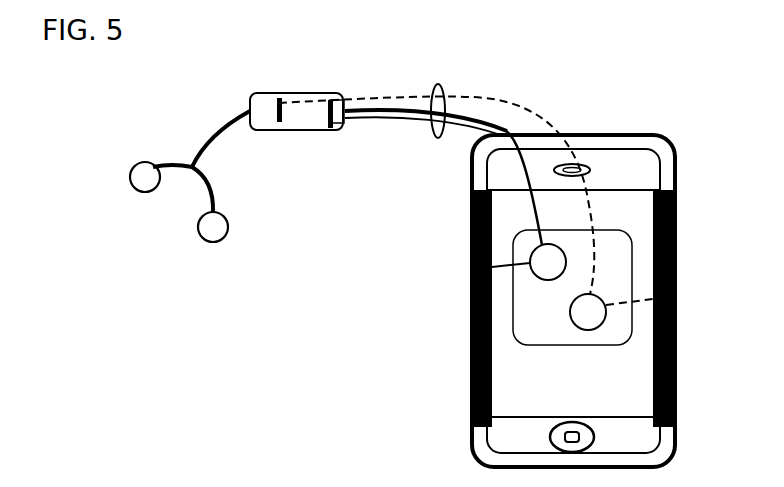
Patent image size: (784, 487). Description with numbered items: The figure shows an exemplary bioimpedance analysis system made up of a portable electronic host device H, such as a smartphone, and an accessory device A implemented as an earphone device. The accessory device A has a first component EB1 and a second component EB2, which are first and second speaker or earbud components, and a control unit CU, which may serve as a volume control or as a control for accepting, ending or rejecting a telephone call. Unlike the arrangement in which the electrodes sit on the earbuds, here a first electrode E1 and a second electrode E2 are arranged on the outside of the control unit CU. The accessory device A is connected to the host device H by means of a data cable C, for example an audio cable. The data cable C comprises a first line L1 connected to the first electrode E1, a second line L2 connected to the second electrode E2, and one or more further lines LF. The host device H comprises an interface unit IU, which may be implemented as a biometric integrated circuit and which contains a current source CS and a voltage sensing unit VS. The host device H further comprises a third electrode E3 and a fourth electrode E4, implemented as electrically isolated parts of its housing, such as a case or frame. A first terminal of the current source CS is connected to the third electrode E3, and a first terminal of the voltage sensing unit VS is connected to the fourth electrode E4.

The accessory device A is at (230, 97).
The first component EB1 is at (133, 192).
The second component EB2 is at (190, 237).
The control unit CU is at (272, 130).
The first electrode E1 is at (278, 100).
The second electrode E2 is at (328, 125).
The second line L2 is at (388, 123).
The data cable C is at (443, 88).
The first line L1 is at (485, 98).
The further lines LF is at (505, 123).
The portable electronic host device H is at (678, 170).
The third electrode E3 is at (677, 328).
The fourth electrode E4 is at (470, 390).
The interface unit IU is at (572, 287).
The voltage sensing unit VS is at (548, 262).
The current source CS is at (611, 312).